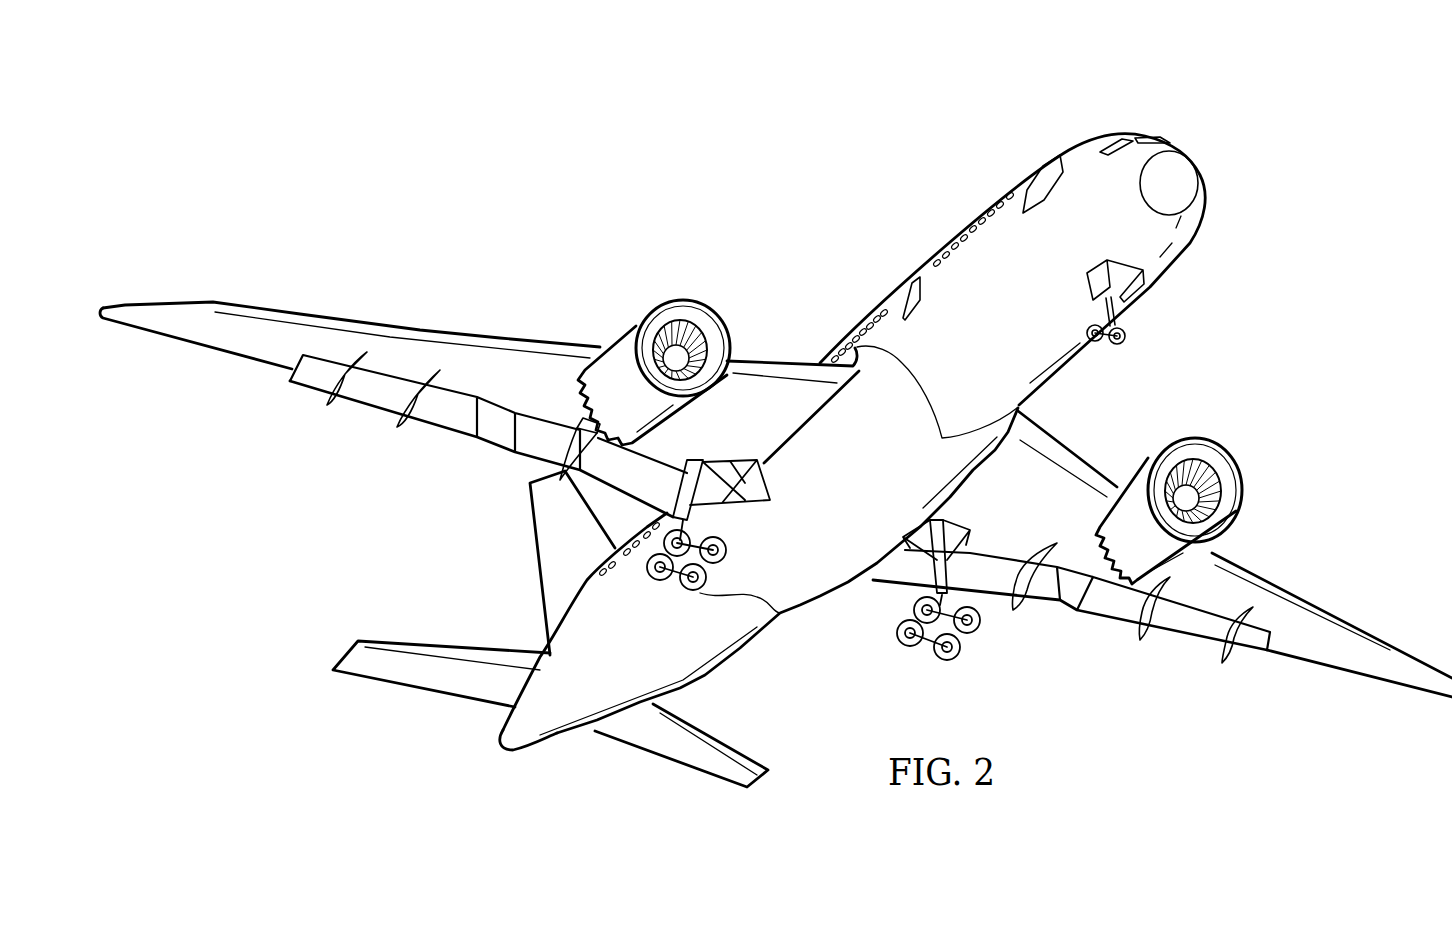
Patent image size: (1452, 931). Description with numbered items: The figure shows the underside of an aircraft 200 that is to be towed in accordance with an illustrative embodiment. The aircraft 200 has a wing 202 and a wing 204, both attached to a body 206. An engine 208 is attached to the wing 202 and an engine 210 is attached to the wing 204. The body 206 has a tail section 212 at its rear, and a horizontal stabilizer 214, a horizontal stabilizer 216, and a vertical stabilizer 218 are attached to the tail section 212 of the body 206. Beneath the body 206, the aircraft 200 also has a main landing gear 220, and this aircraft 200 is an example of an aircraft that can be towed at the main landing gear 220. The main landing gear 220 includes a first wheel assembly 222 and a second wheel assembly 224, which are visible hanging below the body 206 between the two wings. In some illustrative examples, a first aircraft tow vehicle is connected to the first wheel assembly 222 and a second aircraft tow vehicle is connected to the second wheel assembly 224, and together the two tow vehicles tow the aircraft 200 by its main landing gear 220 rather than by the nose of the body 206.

The aircraft 200 is at (1160, 95).
The wing 202 is at (483, 333).
The wing 204 is at (1280, 587).
The body 206 is at (884, 304).
The engine 208 is at (693, 298).
The engine 210 is at (1208, 442).
The tail section 212 is at (450, 570).
The horizontal stabilizer 214 is at (413, 643).
The horizontal stabilizer 216 is at (750, 719).
The vertical stabilizer 218 is at (533, 536).
The main landing gear 220 is at (812, 515).
The first wheel assembly 222 is at (651, 596).
The second wheel assembly 224 is at (905, 669).